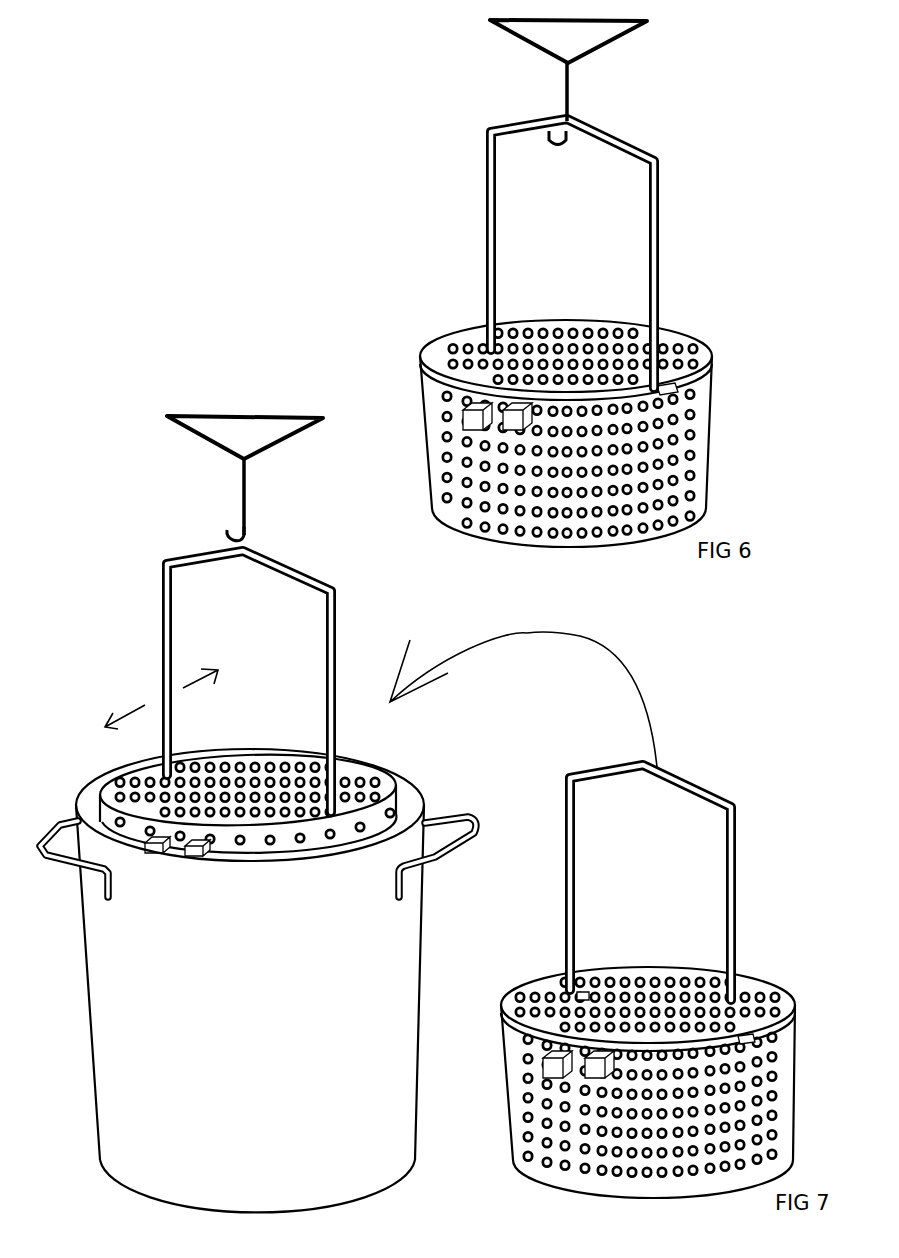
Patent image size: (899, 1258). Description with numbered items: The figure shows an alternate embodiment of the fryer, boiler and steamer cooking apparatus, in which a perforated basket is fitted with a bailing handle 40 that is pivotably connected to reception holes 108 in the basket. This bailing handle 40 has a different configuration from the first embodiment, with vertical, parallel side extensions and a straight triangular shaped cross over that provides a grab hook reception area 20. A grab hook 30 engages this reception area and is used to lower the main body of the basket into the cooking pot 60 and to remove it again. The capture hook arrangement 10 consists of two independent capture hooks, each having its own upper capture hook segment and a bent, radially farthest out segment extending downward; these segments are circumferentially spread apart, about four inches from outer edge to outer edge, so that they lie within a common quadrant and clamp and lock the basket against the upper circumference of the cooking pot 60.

In FIG. 6, the capture hook arrangement 10 is at (510, 424).
In FIG. 7, the capture hook arrangement 10 is at (190, 858).
In FIG. 6, the grab hook reception area 20 is at (567, 135).
In FIG. 6, the grab hook 30 is at (518, 43).
In FIG. 7, the grab hook 30 is at (193, 438).
In FIG. 6, the bailing handle 40 is at (488, 195).
In FIG. 7, the bailing handle 40 is at (167, 625).
In FIG. 7, the cooking pot 60 is at (203, 1039).
In FIG. 6, the reception holes 108 is at (683, 391).
In FIG. 7, the reception holes 108 is at (760, 1041).